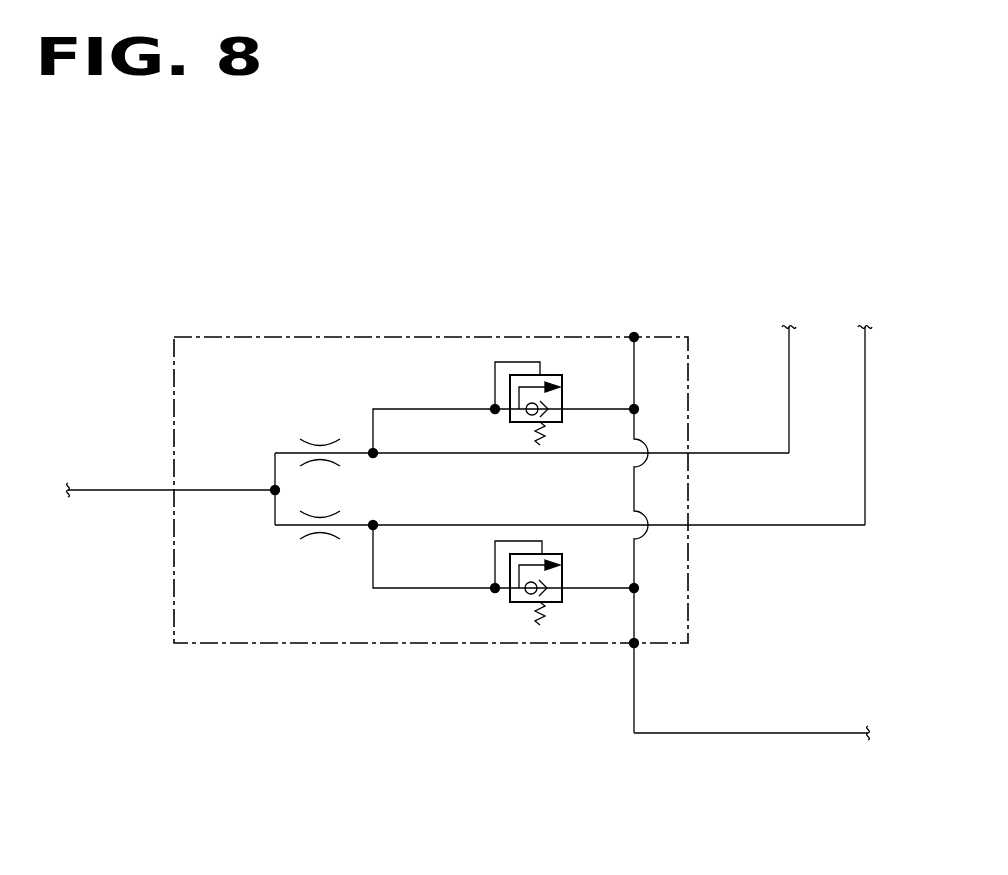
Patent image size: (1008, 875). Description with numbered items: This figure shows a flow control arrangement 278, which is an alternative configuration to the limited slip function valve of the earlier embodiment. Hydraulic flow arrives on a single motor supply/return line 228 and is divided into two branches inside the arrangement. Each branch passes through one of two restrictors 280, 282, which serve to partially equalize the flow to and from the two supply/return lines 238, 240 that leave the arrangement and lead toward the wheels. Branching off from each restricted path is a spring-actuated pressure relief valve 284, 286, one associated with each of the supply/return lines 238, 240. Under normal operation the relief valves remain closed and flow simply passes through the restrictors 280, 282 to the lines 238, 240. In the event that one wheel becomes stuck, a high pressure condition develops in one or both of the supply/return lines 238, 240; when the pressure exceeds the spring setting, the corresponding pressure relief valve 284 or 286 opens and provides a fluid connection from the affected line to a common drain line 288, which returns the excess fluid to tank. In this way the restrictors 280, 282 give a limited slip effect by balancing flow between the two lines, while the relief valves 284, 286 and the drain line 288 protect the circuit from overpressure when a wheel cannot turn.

The flow control arrangement 278 is at (688, 218).
The motor supply/return line 228 is at (140, 490).
The restrictor 280 is at (307, 443).
The restrictor 282 is at (327, 536).
The spring-actuated pressure relief valve 284 is at (552, 375).
The spring-actuated pressure relief valve 286 is at (555, 605).
The supply/return line 238 is at (789, 361).
The supply/return line 240 is at (840, 525).
The drain line 288 is at (775, 733).